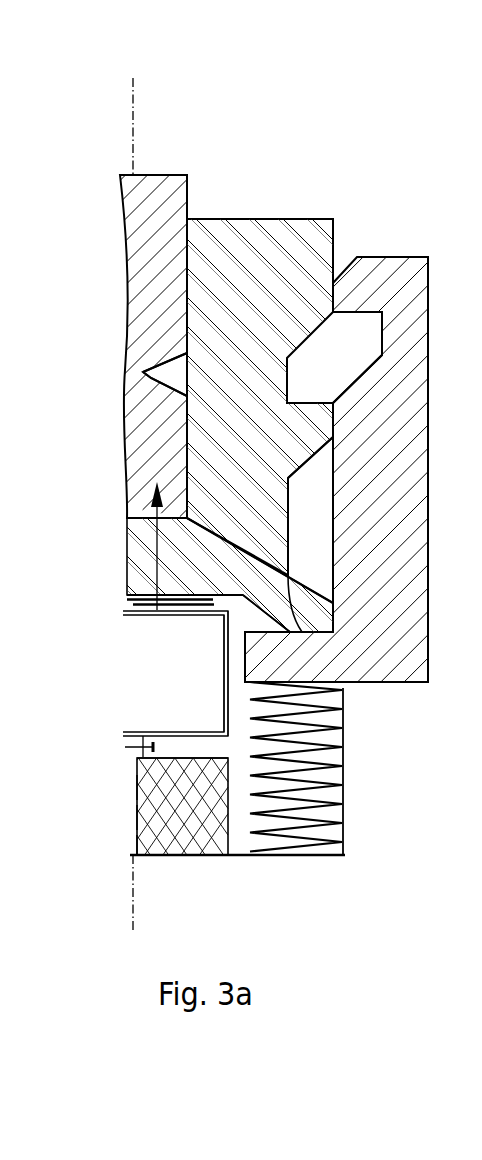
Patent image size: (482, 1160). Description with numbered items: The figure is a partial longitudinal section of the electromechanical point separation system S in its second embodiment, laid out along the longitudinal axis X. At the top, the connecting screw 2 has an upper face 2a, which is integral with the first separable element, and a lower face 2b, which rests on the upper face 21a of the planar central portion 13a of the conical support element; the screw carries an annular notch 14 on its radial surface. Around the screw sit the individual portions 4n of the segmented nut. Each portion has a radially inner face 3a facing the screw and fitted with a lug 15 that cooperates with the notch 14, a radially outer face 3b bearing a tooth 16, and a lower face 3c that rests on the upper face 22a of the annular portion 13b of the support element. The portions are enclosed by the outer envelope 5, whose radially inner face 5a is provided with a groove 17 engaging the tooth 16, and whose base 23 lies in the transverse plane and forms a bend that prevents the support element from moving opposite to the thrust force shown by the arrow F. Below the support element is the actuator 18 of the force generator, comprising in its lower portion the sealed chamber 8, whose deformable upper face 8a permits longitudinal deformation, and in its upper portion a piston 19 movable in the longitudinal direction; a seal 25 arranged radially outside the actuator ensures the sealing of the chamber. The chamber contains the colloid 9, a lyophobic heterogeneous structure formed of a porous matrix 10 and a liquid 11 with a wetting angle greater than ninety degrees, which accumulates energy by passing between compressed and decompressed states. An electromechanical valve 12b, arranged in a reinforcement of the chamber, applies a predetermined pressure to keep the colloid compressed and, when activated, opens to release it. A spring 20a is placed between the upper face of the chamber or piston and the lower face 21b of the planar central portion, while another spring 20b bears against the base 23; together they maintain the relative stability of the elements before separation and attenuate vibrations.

The electromechanical point separation system S is at (97, 97).
The longitudinal axis X is at (145, 501).
The thrust force arrow F is at (163, 543).
The connecting screw 2 is at (133, 415).
The upper face of the connecting screw 2a is at (157, 175).
The lower face of the connecting screw 2b is at (150, 516).
The radially inner face 3a is at (185, 465).
The radially outer face 3b is at (288, 537).
The lower face 3c is at (285, 563).
The individual portions 4n is at (257, 219).
The outer envelope 5 is at (387, 257).
The radially inner face of the outer envelope 5a is at (334, 515).
The sealed chamber 8 is at (182, 855).
The upper face of the chamber 8a is at (137, 758).
The colloid 9 is at (147, 803).
The porous matrix 10 is at (142, 818).
The liquid 11 is at (142, 838).
The electromechanical valve 12b is at (135, 746).
The planar central portion 13a is at (150, 540).
The annular portion 13b is at (300, 610).
The annular notch 14 is at (150, 375).
The lug 15 is at (172, 352).
The tooth 16 is at (313, 445).
The groove 17 is at (383, 348).
The actuator 18 is at (128, 684).
The piston 19 is at (177, 653).
The spring 20a is at (150, 602).
The spring 20b is at (332, 817).
The upper face of the planar central portion 21a is at (122, 502).
The lower face of the planar central portion 21b is at (150, 590).
The upper face of the annular portion 22a is at (300, 634).
The base 23 is at (330, 652).
The seal 25 is at (227, 670).